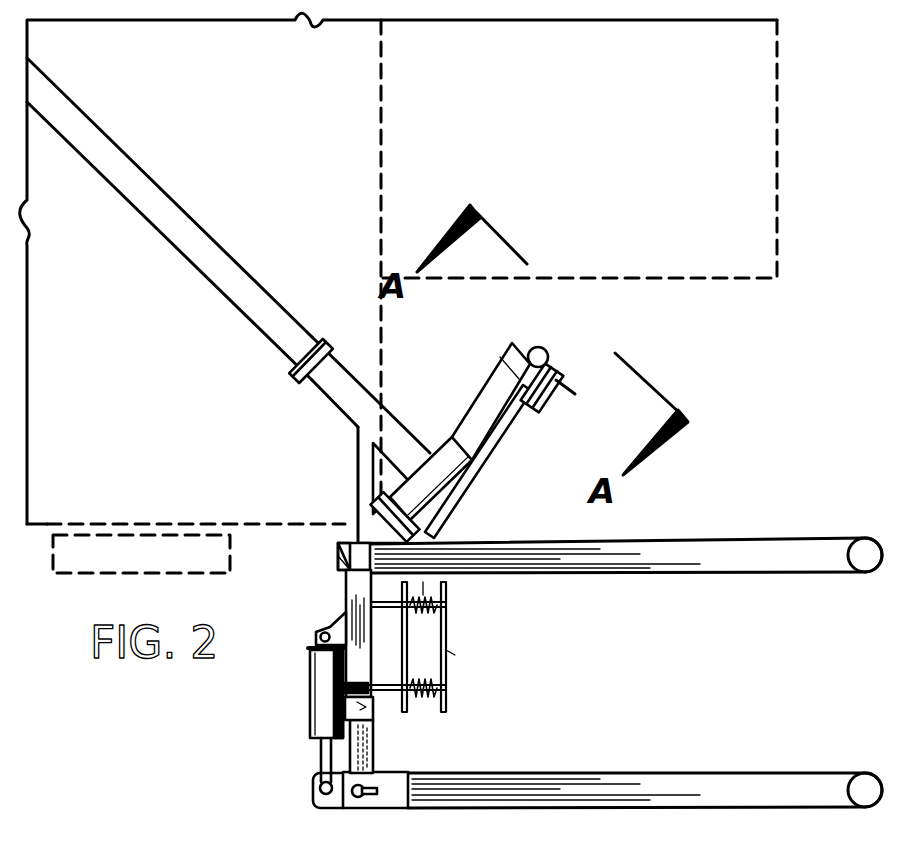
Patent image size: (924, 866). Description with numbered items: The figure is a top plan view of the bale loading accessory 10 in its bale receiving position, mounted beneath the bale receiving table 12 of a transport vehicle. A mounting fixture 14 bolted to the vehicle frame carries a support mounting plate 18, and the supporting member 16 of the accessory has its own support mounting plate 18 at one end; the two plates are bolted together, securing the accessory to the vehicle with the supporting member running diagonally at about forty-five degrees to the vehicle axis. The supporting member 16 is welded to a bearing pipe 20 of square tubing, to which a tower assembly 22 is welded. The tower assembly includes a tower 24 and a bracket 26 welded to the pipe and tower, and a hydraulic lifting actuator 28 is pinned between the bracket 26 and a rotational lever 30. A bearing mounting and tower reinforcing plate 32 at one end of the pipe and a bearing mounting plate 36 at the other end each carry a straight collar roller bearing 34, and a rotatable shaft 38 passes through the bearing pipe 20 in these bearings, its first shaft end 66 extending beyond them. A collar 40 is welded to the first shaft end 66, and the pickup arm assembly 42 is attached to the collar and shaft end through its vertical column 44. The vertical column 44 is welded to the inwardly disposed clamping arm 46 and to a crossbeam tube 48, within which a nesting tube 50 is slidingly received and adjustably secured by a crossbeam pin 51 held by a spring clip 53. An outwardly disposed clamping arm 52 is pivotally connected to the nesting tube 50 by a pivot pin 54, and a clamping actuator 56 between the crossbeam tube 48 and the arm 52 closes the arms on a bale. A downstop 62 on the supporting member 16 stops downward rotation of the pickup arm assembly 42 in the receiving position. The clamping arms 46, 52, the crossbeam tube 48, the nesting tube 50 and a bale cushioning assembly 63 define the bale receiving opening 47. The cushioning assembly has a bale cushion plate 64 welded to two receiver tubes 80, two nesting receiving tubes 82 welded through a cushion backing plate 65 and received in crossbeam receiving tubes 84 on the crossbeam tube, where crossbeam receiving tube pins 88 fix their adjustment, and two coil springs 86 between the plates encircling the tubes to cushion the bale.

The bale loading accessory 10 is at (690, 472).
The bale receiving table 12 is at (398, 293).
The mounting fixture 14 is at (231, 303).
The supporting member 16 is at (333, 407).
The support mounting plate 18 is at (327, 340).
The bearing pipe 20 is at (447, 487).
The tower assembly 22 is at (497, 438).
The tower 24 is at (528, 410).
The bracket 26 is at (480, 392).
The lifting actuator 28 is at (550, 360).
The rotational lever 30 is at (576, 390).
The bearing mounting and tower reinforcing plate 32 is at (548, 408).
The straight collar roller bearing 34 is at (562, 397).
The bearing mounting plate 36 is at (415, 530).
The rotatable shaft 38 is at (368, 500).
The collar 40 is at (358, 530).
The pickup arm assembly 42 is at (344, 702).
The vertical column 44 is at (346, 583).
The inwardly disposed clamping arm 46 is at (628, 573).
The bale receiving opening 47 is at (757, 670).
The crossbeam tube 48 is at (375, 718).
The nesting tube 50 is at (374, 749).
The crossbeam pin 51 is at (356, 704).
The outwardly disposed clamping arm 52 is at (655, 780).
The spring clip 53 is at (322, 718).
The pivot pin 54 is at (360, 800).
The clamping actuator 56 is at (310, 722).
The downstop 62 is at (357, 462).
The bale cushioning assembly 63 is at (483, 647).
The bale cushion plate 64 is at (455, 655).
The cushion backing plate 65 is at (440, 628).
The first shaft end 66 is at (338, 550).
The receiver tube 80 is at (446, 607).
The nesting receiving tube 82 is at (402, 612).
The crossbeam receiving tube 84 is at (322, 666).
The coil spring 86 is at (438, 596).
The crossbeam receiving tube pin 88 is at (312, 651).